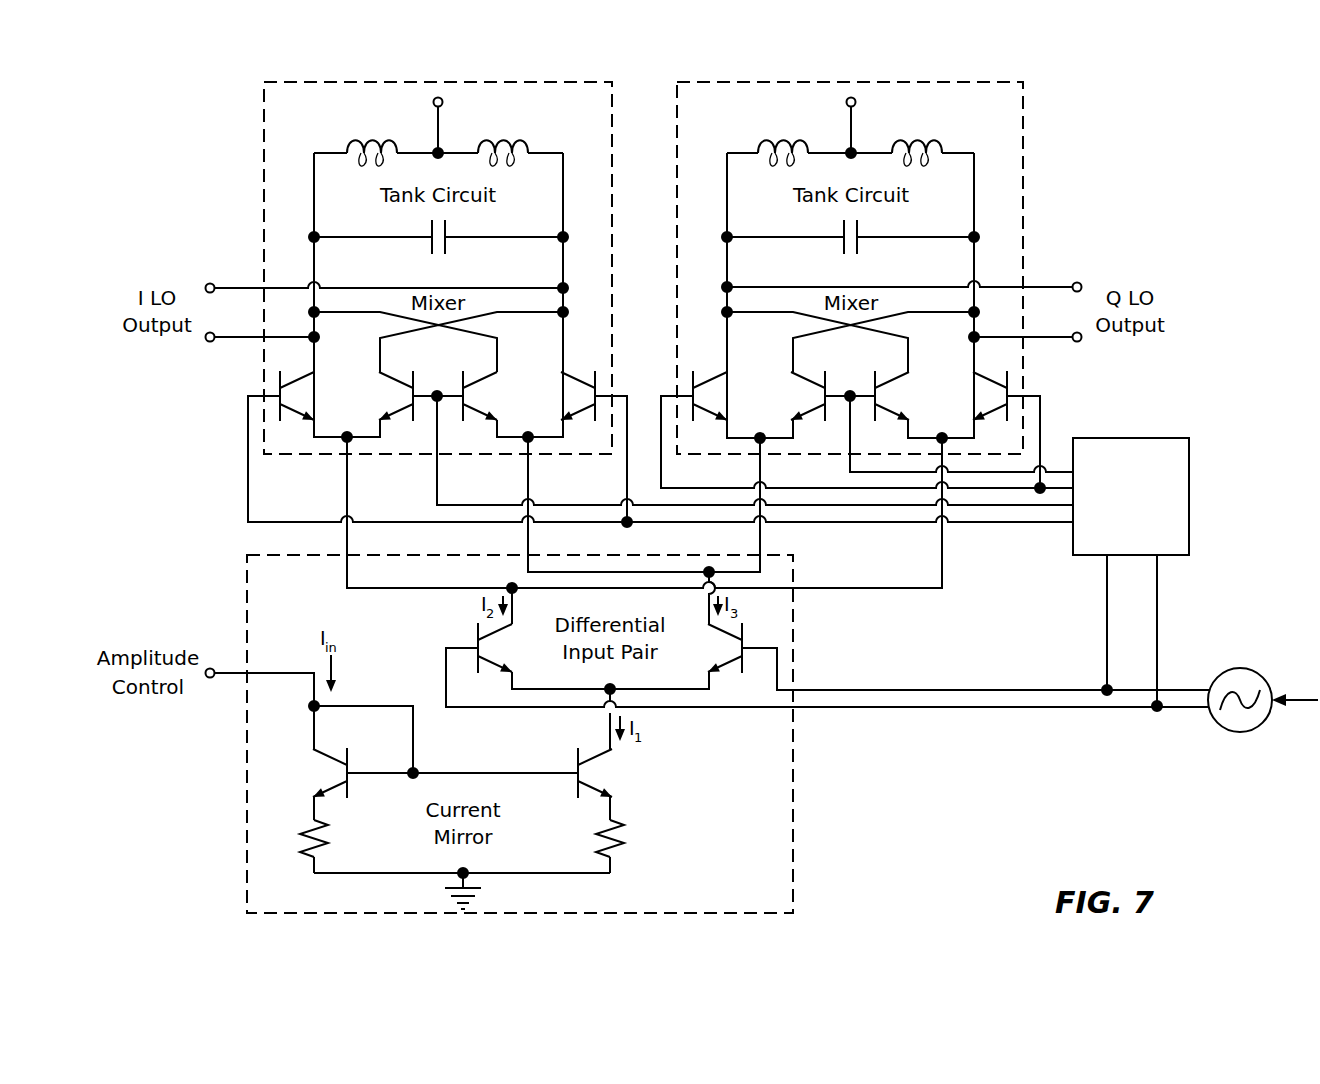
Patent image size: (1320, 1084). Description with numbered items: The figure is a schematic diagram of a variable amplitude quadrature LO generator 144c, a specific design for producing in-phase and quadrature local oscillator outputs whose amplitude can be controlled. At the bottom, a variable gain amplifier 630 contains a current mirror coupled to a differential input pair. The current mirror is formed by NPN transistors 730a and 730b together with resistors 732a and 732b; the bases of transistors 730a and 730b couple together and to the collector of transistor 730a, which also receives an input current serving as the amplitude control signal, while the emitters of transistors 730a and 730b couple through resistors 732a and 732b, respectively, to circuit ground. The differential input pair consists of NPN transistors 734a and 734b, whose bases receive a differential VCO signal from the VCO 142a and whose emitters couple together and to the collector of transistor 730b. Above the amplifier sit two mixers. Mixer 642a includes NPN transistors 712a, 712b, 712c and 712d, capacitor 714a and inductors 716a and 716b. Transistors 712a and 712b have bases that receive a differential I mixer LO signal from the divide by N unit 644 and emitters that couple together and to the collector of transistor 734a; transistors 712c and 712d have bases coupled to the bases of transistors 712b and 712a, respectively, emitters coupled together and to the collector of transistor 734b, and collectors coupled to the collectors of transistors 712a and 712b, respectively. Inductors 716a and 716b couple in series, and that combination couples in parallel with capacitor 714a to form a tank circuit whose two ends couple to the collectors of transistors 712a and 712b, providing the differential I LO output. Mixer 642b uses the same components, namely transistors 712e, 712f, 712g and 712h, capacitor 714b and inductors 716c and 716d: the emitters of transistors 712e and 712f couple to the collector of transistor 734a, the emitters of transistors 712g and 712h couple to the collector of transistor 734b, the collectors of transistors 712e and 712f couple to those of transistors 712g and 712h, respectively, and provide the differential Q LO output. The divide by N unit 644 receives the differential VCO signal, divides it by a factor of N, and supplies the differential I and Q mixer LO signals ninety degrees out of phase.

The variable amplitude quadrature LO generator 144c is at (1247, 124).
The mixer 642a is at (612, 175).
The mixer 642b is at (1023, 175).
The inductor 716a is at (366, 142).
The inductor 716b is at (498, 142).
The inductor 716c is at (777, 142).
The inductor 716d is at (912, 142).
The capacitor 714a is at (446, 248).
The capacitor 714b is at (858, 248).
The NPN transistor 712a is at (290, 381).
The NPN transistor 712b is at (403, 381).
The NPN transistor 712c is at (473, 381).
The NPN transistor 712d is at (585, 381).
The NPN transistor 712e is at (703, 381).
The NPN transistor 712f is at (815, 381).
The NPN transistor 712g is at (885, 381).
The NPN transistor 712h is at (997, 381).
The divide by N unit 644 is at (1138, 424).
The VCO 142a is at (1232, 669).
The variable gain amplifier 630 is at (793, 780).
The NPN transistor 734a is at (508, 637).
The NPN transistor 734b is at (712, 637).
The NPN transistor 730a is at (322, 765).
The NPN transistor 730b is at (607, 759).
The resistor 732a is at (330, 840).
The resistor 732b is at (626, 840).